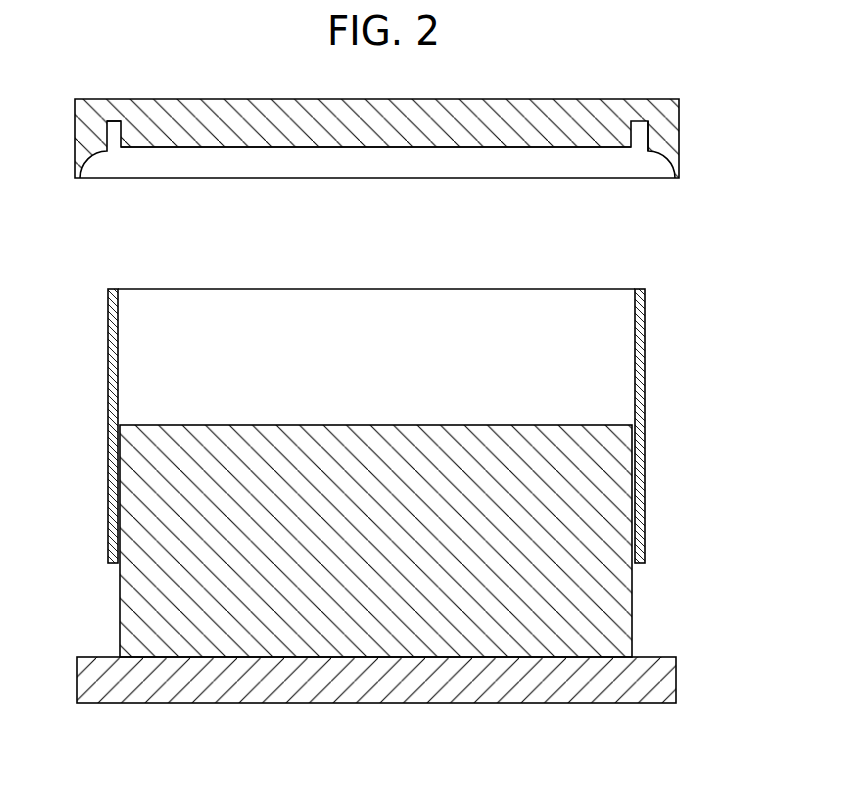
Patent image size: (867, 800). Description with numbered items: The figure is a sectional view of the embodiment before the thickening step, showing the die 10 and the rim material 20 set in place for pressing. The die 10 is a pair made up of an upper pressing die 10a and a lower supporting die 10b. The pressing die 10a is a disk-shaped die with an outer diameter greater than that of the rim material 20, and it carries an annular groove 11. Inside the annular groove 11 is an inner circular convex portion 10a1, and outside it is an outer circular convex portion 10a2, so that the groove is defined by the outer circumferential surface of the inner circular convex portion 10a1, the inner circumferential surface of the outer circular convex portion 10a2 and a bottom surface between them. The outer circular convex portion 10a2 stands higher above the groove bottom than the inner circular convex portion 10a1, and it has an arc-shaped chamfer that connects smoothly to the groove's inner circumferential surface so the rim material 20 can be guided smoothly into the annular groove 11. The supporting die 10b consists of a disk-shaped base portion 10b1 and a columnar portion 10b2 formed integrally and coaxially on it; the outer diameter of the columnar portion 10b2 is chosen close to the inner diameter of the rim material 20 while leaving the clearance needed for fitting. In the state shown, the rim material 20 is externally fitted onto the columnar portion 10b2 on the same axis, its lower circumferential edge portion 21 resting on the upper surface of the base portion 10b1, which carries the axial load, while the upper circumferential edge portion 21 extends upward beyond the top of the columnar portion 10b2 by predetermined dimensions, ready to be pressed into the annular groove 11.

The die 10 is at (430, 435).
The pressing die 10a is at (427, 166).
The inner circular convex portion 10a1 is at (495, 148).
The outer circular convex portion 10a2 is at (675, 135).
The supporting die 10b is at (413, 569).
The base portion 10b1 is at (553, 696).
The columnar portion 10b2 is at (609, 505).
The annular groove 11 is at (113, 122).
The rim material 20 is at (330, 426).
The circumferential edge portion 21 is at (104, 289).